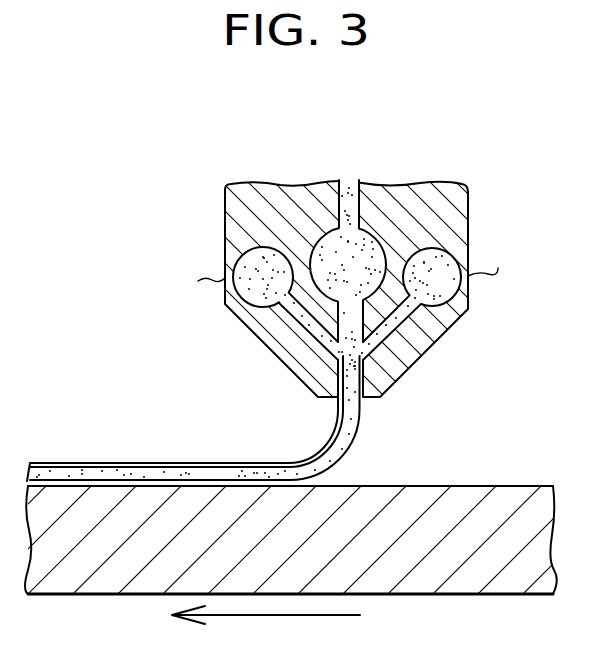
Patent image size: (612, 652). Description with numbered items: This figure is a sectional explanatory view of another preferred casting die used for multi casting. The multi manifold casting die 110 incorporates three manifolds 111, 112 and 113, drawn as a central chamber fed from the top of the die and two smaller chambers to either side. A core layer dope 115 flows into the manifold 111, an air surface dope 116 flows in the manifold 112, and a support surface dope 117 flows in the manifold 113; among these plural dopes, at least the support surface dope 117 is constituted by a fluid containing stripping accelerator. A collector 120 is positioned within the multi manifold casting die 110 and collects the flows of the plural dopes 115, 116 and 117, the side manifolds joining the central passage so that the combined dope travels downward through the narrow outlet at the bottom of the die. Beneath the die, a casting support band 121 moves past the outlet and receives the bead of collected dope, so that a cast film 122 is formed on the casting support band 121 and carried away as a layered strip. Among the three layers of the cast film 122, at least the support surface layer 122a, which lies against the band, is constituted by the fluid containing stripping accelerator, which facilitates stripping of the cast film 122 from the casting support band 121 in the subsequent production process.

The multi manifold casting die 110 is at (208, 218).
The manifold 111 is at (318, 234).
The manifold 112 is at (233, 277).
The manifold 113 is at (461, 275).
The core layer dope 115 is at (366, 248).
The air surface dope 116 is at (238, 309).
The support surface dope 117 is at (466, 308).
The collector 120 is at (383, 366).
The casting support band 121 is at (500, 502).
The cast film 122 is at (193, 418).
The support surface layer 122a is at (197, 480).